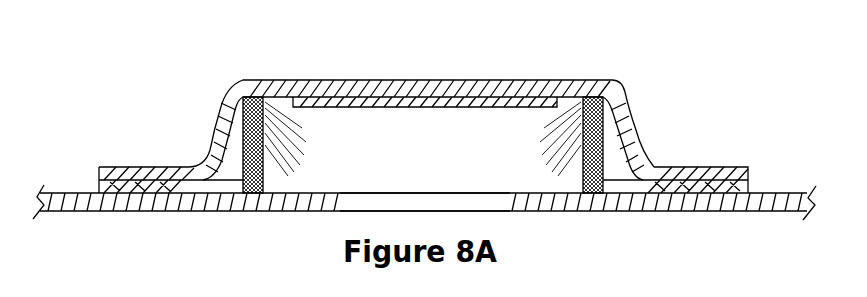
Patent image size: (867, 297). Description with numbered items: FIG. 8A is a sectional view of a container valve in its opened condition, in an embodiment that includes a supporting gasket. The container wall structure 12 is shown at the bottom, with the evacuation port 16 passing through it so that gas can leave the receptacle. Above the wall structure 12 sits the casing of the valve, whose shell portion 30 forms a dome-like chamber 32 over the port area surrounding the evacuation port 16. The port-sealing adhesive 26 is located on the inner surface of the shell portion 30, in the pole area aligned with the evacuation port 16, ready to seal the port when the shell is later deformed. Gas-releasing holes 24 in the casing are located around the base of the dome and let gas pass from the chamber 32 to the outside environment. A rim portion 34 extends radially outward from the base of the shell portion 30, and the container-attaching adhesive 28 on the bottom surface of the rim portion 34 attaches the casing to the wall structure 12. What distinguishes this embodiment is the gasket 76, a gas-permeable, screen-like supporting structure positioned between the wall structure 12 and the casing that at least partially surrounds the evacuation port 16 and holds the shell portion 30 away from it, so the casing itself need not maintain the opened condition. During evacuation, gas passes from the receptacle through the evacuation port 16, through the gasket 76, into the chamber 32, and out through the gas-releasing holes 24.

The wall structure 12 is at (599, 198).
The evacuation port 16 is at (362, 201).
The gas-releasing holes 24 is at (630, 130).
The port-sealing adhesive 26 is at (470, 100).
The container-attaching adhesive 28 is at (102, 192).
The shell portion 30 is at (430, 80).
The chamber 32 is at (423, 136).
The rim portion 34 is at (742, 166).
The gasket 76 is at (606, 100).